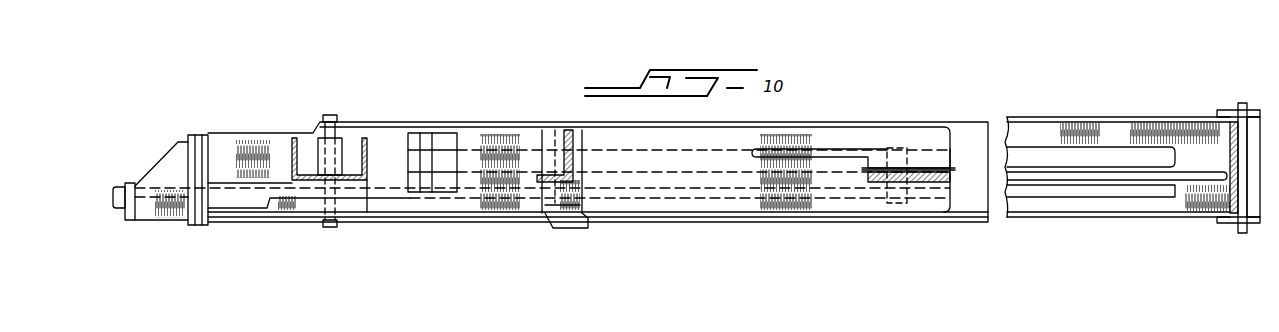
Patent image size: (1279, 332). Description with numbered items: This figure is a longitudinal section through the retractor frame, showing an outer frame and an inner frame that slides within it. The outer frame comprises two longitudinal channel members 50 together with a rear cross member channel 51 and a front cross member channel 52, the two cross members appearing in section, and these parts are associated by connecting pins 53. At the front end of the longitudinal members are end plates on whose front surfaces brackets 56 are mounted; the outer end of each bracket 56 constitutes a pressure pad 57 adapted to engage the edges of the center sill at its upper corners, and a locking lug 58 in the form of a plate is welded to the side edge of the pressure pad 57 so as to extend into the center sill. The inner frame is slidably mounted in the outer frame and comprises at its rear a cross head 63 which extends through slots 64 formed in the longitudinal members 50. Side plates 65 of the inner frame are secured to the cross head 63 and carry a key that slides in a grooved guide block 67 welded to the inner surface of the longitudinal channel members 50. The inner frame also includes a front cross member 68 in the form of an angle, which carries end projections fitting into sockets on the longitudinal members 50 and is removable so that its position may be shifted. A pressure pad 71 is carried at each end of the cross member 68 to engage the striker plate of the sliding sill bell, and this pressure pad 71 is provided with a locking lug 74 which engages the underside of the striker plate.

The longitudinal channel member 50 is at (1110, 208).
The rear cross member channel 51 is at (1240, 157).
The front cross member channel 52 is at (365, 152).
The connecting pin 53 is at (333, 118).
The bracket 56 is at (178, 217).
The pressure pad 57 is at (130, 220).
The locking lug 58 is at (118, 203).
The cross head 63 is at (918, 170).
The slot 64 is at (1190, 173).
The side plate 65 is at (832, 135).
The grooved guide block 67 is at (1027, 153).
The front cross member 68 is at (583, 140).
The pressure pad 71 is at (578, 198).
The locking lug 74 is at (582, 230).